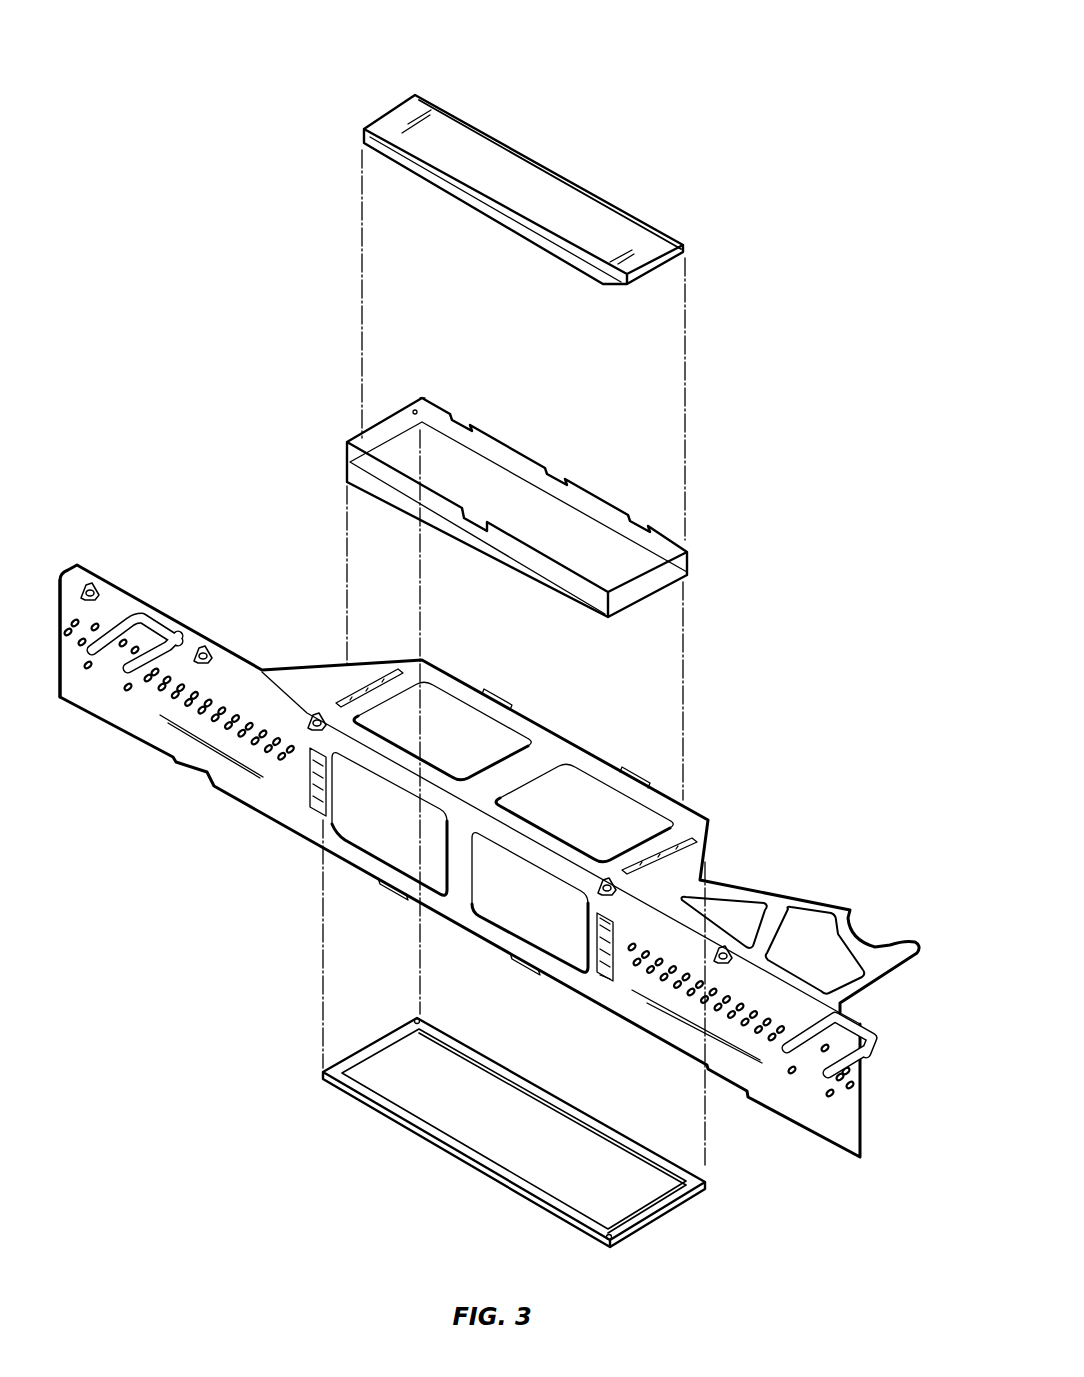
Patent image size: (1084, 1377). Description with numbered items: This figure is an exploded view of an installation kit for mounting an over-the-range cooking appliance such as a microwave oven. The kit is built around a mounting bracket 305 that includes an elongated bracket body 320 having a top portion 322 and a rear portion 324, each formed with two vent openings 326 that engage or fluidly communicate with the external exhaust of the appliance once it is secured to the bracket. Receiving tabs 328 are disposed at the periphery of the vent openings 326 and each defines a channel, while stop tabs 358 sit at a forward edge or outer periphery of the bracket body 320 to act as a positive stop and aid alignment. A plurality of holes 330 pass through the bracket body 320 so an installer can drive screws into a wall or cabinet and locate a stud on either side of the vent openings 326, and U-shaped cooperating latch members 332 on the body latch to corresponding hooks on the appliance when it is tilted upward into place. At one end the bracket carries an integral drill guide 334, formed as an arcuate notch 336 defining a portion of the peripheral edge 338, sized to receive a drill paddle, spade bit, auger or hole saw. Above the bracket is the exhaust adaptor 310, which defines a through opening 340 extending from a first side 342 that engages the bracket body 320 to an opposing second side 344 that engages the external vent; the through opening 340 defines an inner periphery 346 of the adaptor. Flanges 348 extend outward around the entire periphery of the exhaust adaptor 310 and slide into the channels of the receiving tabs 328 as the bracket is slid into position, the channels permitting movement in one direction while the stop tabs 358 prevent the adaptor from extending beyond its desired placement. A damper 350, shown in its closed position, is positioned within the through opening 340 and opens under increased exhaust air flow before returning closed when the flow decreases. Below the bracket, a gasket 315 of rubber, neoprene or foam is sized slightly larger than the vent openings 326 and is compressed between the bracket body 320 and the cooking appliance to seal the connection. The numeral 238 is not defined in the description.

The slot 238 is at (603, 960).
The mounting bracket 305 is at (75, 447).
The exhaust adaptor 310 is at (699, 494).
The gasket 315 is at (660, 1212).
The bracket body 320 is at (478, 861).
The top portion 322 is at (702, 856).
The rear portion 324 is at (80, 690).
The vent openings 326 is at (470, 735).
The receiving tabs 328 is at (362, 690).
The holes 330 is at (246, 706).
The cooperating latch members 332 is at (140, 633).
The drill guide 334 is at (848, 912).
The arcuate notch 336 is at (868, 927).
The peripheral edge 338 is at (892, 947).
The through opening 340 is at (515, 480).
The first side 342 is at (557, 592).
The second side 344 is at (425, 398).
The inner periphery 346 is at (495, 533).
The flanges 348 is at (362, 448).
The damper 350 is at (410, 125).
The stop tabs 358 is at (647, 785).